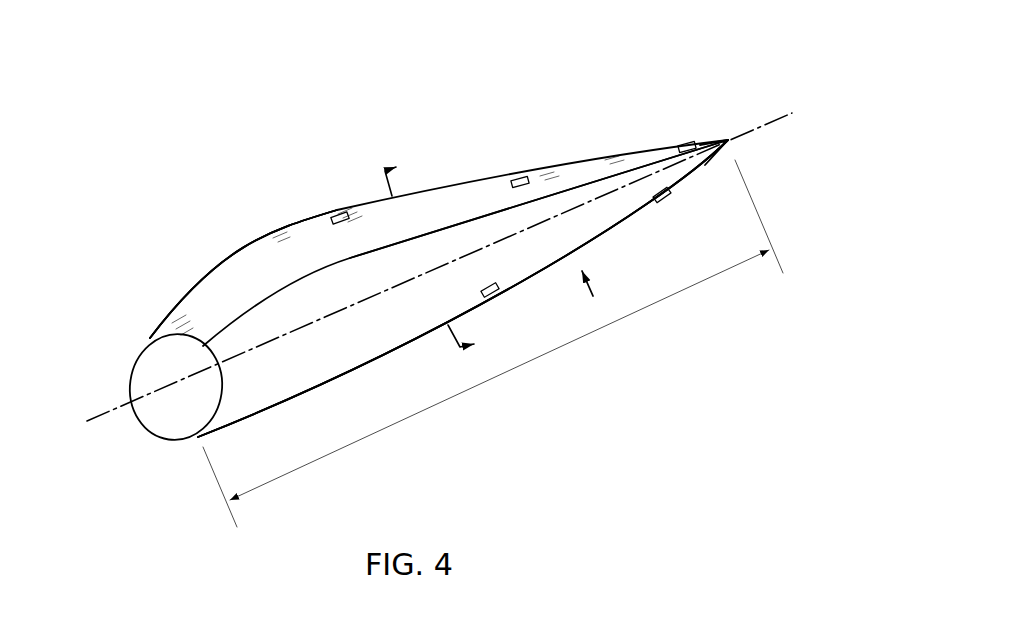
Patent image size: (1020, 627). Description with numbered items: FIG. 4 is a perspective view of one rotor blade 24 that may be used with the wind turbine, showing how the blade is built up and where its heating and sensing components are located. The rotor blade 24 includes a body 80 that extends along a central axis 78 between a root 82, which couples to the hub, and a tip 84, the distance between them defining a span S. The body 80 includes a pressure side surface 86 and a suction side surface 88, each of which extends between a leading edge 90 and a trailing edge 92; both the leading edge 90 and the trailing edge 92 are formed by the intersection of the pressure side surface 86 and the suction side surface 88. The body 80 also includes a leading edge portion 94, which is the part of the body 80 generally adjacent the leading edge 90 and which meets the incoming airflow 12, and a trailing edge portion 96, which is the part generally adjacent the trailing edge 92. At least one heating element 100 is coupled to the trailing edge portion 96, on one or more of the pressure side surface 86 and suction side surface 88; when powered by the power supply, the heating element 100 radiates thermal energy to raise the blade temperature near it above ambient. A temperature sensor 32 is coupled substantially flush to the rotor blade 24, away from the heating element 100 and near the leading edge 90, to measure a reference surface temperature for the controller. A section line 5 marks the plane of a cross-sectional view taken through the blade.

The rotor blade 24 is at (170, 166).
The root 82 is at (145, 322).
The tip 84 is at (728, 130).
The trailing edge 92 is at (301, 206).
The trailing edge portion 96 is at (218, 276).
The body 80 is at (248, 260).
The pressure side surface 86 is at (446, 201).
The heating element 100 is at (588, 183).
The suction side surface 88 is at (336, 369).
The leading edge 90 is at (405, 352).
The leading edge portion 94 is at (285, 389).
The temperature sensor 32 is at (341, 213).
The section line 5 is at (440, 253).
The central axis 78 is at (788, 121).
The airflow 12 is at (599, 293).
The span S is at (493, 343).